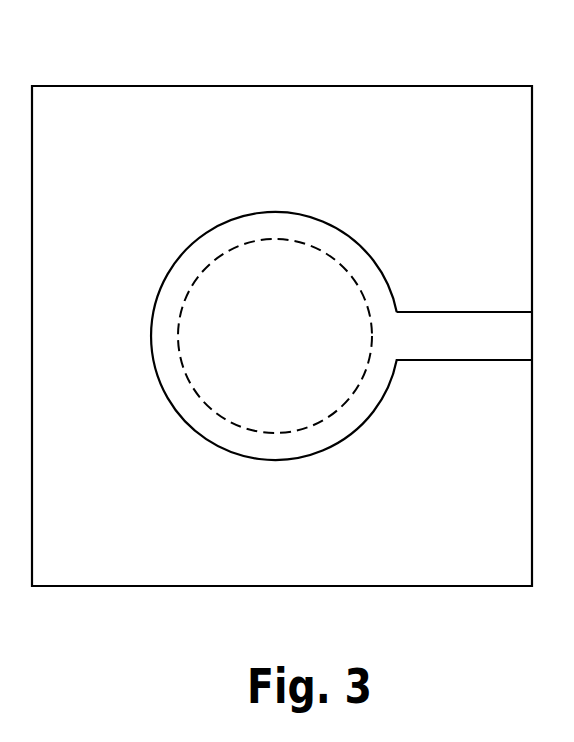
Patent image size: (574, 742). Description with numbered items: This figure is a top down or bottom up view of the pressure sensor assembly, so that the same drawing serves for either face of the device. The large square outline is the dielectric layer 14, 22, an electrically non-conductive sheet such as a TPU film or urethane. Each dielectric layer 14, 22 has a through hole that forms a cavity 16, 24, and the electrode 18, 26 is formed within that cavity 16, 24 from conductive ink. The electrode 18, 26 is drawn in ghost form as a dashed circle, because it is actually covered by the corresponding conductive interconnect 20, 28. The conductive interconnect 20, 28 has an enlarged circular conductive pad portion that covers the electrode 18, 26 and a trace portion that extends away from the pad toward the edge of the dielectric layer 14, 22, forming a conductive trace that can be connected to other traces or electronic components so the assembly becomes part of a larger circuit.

The dielectric layer 14 is at (282, 306).
The dielectric layer 22 is at (435, 98).
The cavity 16 is at (305, 310).
The cavity 24 is at (333, 258).
The electrode 18 is at (333, 353).
The electrode 26 is at (240, 410).
The conductive interconnect 20 is at (464, 377).
The conductive interconnect 28 is at (491, 350).